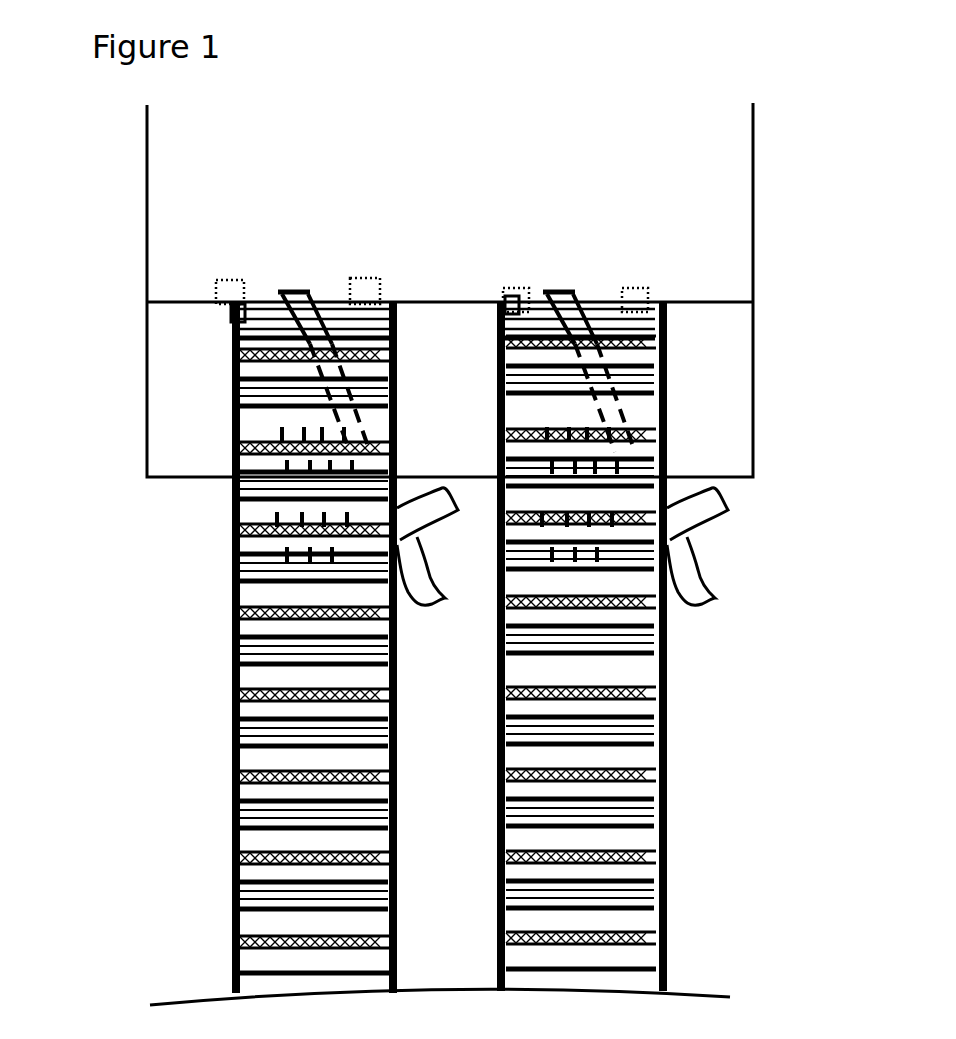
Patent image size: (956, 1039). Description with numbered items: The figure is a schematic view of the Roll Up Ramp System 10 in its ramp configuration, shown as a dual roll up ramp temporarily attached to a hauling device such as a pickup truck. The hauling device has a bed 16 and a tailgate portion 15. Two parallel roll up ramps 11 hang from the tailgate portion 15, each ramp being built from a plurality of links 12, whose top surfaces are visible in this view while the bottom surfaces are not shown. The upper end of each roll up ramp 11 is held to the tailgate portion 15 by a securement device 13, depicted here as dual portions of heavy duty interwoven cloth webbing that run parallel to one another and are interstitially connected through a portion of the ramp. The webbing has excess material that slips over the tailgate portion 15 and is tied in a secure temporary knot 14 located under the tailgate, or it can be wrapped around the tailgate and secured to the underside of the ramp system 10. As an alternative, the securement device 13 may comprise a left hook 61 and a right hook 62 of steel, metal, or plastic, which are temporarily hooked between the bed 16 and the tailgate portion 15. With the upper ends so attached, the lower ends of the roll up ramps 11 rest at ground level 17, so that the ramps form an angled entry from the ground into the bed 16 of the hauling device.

The roll up ramp system 10 is at (302, 34).
The roll up ramp 11 is at (230, 685).
The link 12 is at (682, 827).
The securement device 13 is at (250, 545).
The temporary knot 14 is at (698, 547).
The tailgate portion 15 is at (147, 400).
The bed 16 is at (742, 253).
The ground level 17 is at (149, 1004).
The left hook 61 is at (220, 290).
The right hook 62 is at (360, 280).